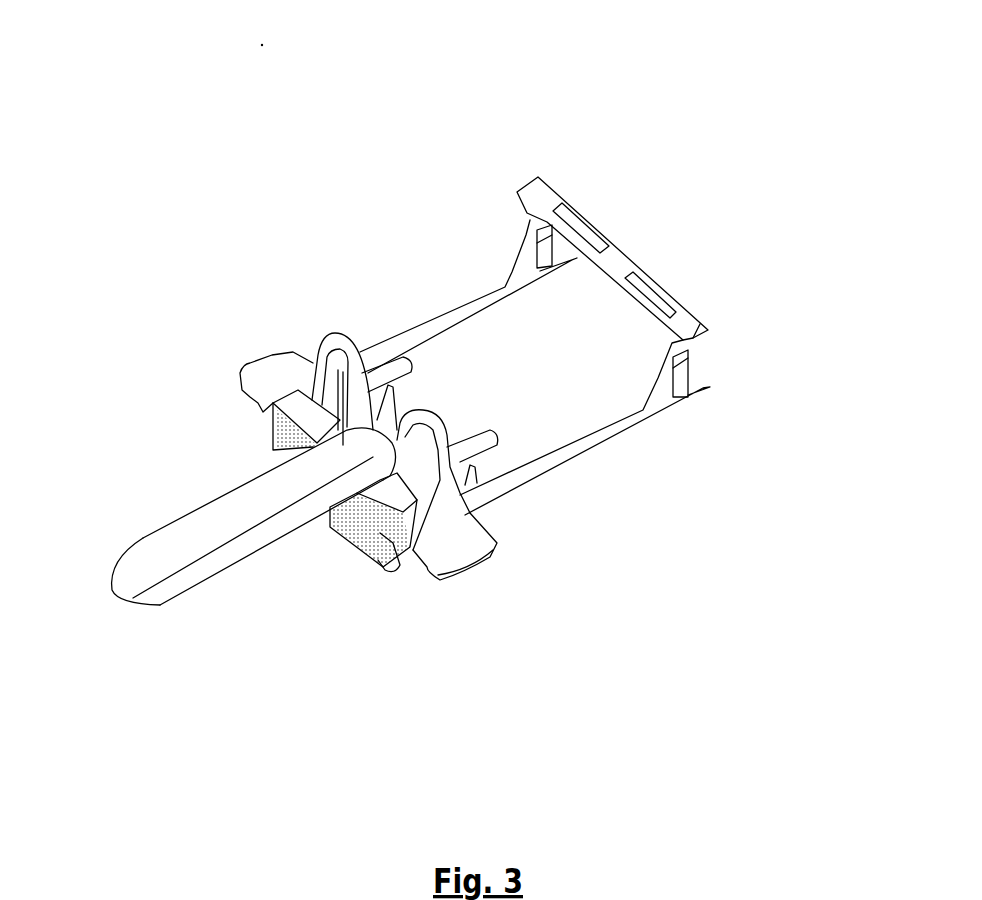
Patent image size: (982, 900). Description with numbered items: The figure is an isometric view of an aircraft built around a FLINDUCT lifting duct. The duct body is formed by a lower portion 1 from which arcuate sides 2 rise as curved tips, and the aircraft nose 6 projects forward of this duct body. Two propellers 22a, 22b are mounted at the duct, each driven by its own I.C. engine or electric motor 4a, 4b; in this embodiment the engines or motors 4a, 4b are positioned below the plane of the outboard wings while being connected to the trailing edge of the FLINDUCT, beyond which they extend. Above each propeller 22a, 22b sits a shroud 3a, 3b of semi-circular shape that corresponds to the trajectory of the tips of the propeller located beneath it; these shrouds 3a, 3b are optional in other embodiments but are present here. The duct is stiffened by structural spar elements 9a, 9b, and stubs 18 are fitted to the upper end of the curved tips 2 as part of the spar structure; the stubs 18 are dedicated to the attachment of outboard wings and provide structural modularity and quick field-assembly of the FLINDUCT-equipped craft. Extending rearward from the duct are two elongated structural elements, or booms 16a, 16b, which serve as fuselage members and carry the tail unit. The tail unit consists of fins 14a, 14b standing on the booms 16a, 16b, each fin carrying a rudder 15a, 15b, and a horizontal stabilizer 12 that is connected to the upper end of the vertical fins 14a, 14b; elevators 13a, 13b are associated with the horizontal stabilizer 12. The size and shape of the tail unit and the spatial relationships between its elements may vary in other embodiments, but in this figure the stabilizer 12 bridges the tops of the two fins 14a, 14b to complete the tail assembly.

The lower portion of the FLINDUCT 1 is at (379, 493).
The arcuate sides of the FLINDUCT 2 is at (281, 435).
The shroud 3a is at (341, 342).
The shroud 3b is at (440, 437).
The I.C. engine/electric motor 4a is at (329, 398).
The I.C. engine/electric motor 4b is at (418, 487).
The aircraft nose 6 is at (165, 580).
The spar 9a is at (302, 421).
The spar 9b is at (368, 528).
The horizontal stabilizer 12 is at (613, 257).
The elevator 13a is at (587, 225).
The elevator 13b is at (656, 293).
The fin 14a is at (528, 247).
The fin 14b is at (680, 378).
The rudder 15a is at (543, 248).
The rudder 15b is at (663, 382).
The boom 16a is at (381, 337).
The boom 16b is at (557, 457).
The stub 18 is at (458, 558).
The propeller 22a is at (339, 376).
The propeller 22b is at (427, 455).